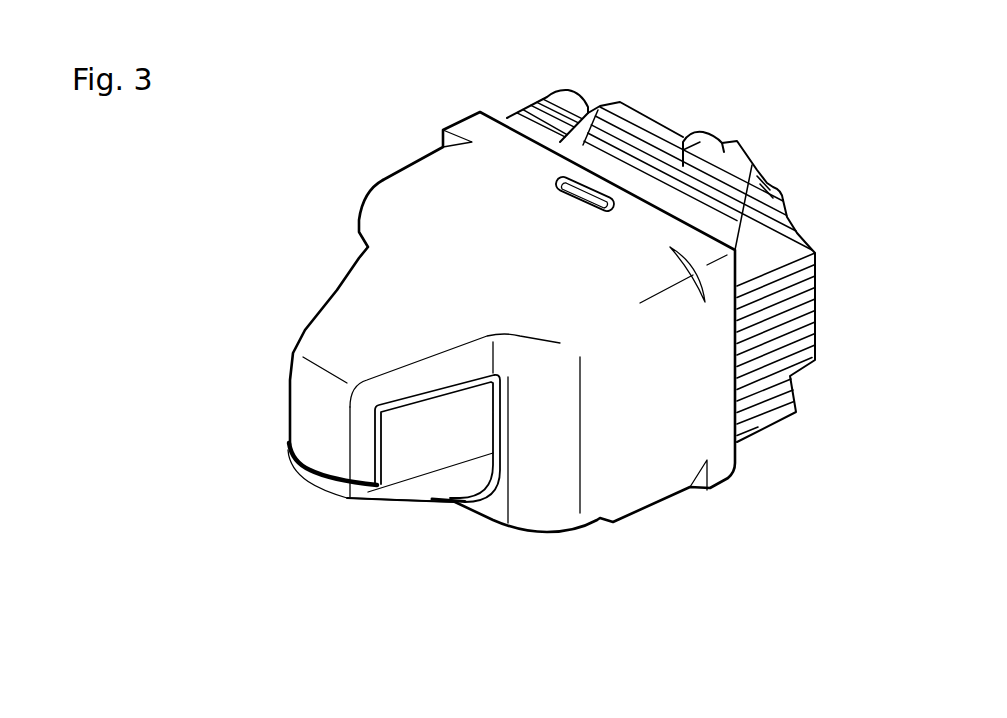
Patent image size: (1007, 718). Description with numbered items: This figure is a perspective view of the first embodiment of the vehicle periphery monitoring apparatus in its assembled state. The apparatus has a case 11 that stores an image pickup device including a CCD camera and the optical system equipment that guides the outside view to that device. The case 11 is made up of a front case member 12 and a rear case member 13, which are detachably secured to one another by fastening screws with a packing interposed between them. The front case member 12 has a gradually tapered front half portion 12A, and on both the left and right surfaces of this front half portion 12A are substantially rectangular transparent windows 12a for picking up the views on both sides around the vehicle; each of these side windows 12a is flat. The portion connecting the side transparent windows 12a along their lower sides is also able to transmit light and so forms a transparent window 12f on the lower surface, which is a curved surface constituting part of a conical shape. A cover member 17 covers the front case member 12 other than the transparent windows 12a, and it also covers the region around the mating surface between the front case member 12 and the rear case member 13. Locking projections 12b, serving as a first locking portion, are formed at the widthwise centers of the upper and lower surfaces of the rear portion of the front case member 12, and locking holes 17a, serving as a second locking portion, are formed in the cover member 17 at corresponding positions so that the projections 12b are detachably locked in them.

The case 11 is at (697, 105).
The front case member 12 is at (323, 488).
The transparent window 12a is at (423, 447).
The front half portion 12A is at (395, 500).
The locking projection 12b is at (580, 190).
The transparent window on the lower surface 12f is at (422, 487).
The rear case member 13 is at (775, 238).
The cover member 17 is at (383, 180).
The locking hole 17a is at (583, 195).